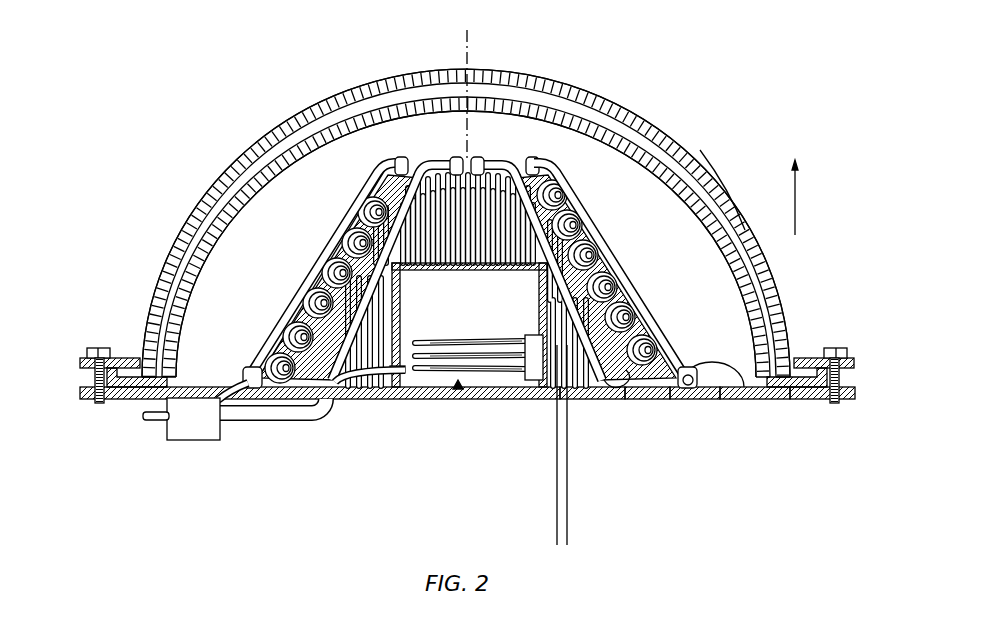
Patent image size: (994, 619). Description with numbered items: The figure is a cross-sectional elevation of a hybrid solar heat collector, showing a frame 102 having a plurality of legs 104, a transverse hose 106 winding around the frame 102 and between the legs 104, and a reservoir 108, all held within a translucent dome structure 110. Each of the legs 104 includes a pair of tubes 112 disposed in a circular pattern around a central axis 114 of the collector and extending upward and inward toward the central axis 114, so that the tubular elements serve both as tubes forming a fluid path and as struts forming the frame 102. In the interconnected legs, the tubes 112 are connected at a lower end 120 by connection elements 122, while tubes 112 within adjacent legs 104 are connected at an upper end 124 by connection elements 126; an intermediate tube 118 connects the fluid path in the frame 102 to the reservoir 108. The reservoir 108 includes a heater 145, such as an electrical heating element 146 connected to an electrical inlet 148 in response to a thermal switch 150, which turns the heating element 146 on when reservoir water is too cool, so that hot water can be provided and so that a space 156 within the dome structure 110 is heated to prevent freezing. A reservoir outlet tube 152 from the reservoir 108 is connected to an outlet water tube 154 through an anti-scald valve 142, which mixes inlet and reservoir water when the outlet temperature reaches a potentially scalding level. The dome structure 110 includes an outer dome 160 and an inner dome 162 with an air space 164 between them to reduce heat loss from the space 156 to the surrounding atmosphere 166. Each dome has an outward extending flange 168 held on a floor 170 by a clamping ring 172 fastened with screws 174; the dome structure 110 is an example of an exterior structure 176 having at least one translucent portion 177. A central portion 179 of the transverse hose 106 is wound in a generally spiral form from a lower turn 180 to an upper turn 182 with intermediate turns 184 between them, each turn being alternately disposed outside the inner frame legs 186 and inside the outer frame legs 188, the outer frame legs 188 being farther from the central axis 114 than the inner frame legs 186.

The frame 102 is at (250, 352).
The legs 104 is at (631, 262).
The transverse hose 106 is at (318, 236).
The reservoir 108 is at (478, 309).
The translucent dome structure 110 is at (698, 147).
The tubes 112 is at (664, 332).
The central axis 114 is at (462, 53).
The intermediate tube 118 is at (287, 287).
The lower end 120 is at (745, 402).
The connection elements 122 is at (682, 402).
The upper end 124 is at (580, 176).
The connection elements 126 is at (536, 162).
The anti-scald valve 142 is at (197, 442).
The heater 145 is at (458, 403).
The electrical heating element 146 is at (456, 341).
The electrical inlet 148 is at (560, 523).
The thermal switch 150 is at (547, 402).
The reservoir outlet tube 152 is at (286, 422).
The outlet water tube 154 is at (153, 420).
The space 156 is at (392, 146).
The outer dome 160 is at (272, 132).
The inner dome 162 is at (229, 205).
The air space 164 is at (192, 255).
The surrounding atmosphere 166 is at (786, 101).
The flange 168 is at (802, 402).
The floor 170 is at (430, 402).
The clamping ring 172 is at (806, 358).
The screws 174 is at (101, 347).
The exterior structure 176 is at (331, 92).
The translucent portion 177 is at (728, 210).
The central portion 179 is at (293, 270).
The lower turn 180 is at (668, 343).
The upper turn 182 is at (604, 160).
The intermediate turns 184 is at (600, 234).
The inner frame legs 186 is at (593, 402).
The outer frame legs 188 is at (659, 402).